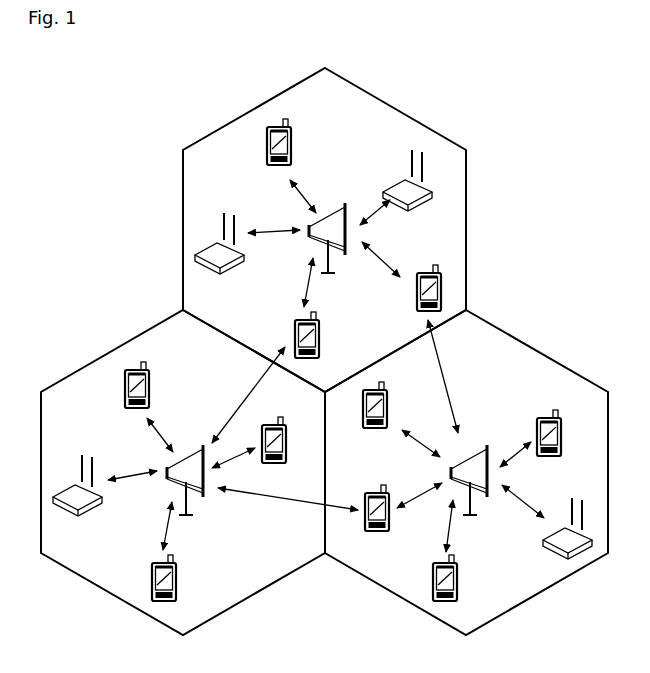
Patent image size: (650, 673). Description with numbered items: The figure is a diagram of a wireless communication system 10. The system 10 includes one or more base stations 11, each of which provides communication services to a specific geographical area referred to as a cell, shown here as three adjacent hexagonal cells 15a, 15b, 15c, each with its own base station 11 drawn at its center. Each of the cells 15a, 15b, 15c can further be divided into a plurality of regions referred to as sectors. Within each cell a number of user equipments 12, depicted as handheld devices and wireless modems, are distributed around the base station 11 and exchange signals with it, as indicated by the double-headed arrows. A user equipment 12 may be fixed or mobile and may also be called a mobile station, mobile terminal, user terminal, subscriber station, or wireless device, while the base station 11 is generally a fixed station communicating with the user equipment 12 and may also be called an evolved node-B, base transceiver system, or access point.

The wireless communication system 10 is at (324, 351).
The base station 11 is at (340, 214).
The user equipment 12 is at (292, 150).
The cell 15a is at (467, 220).
The cell 15b is at (553, 360).
The cell 15c is at (95, 360).